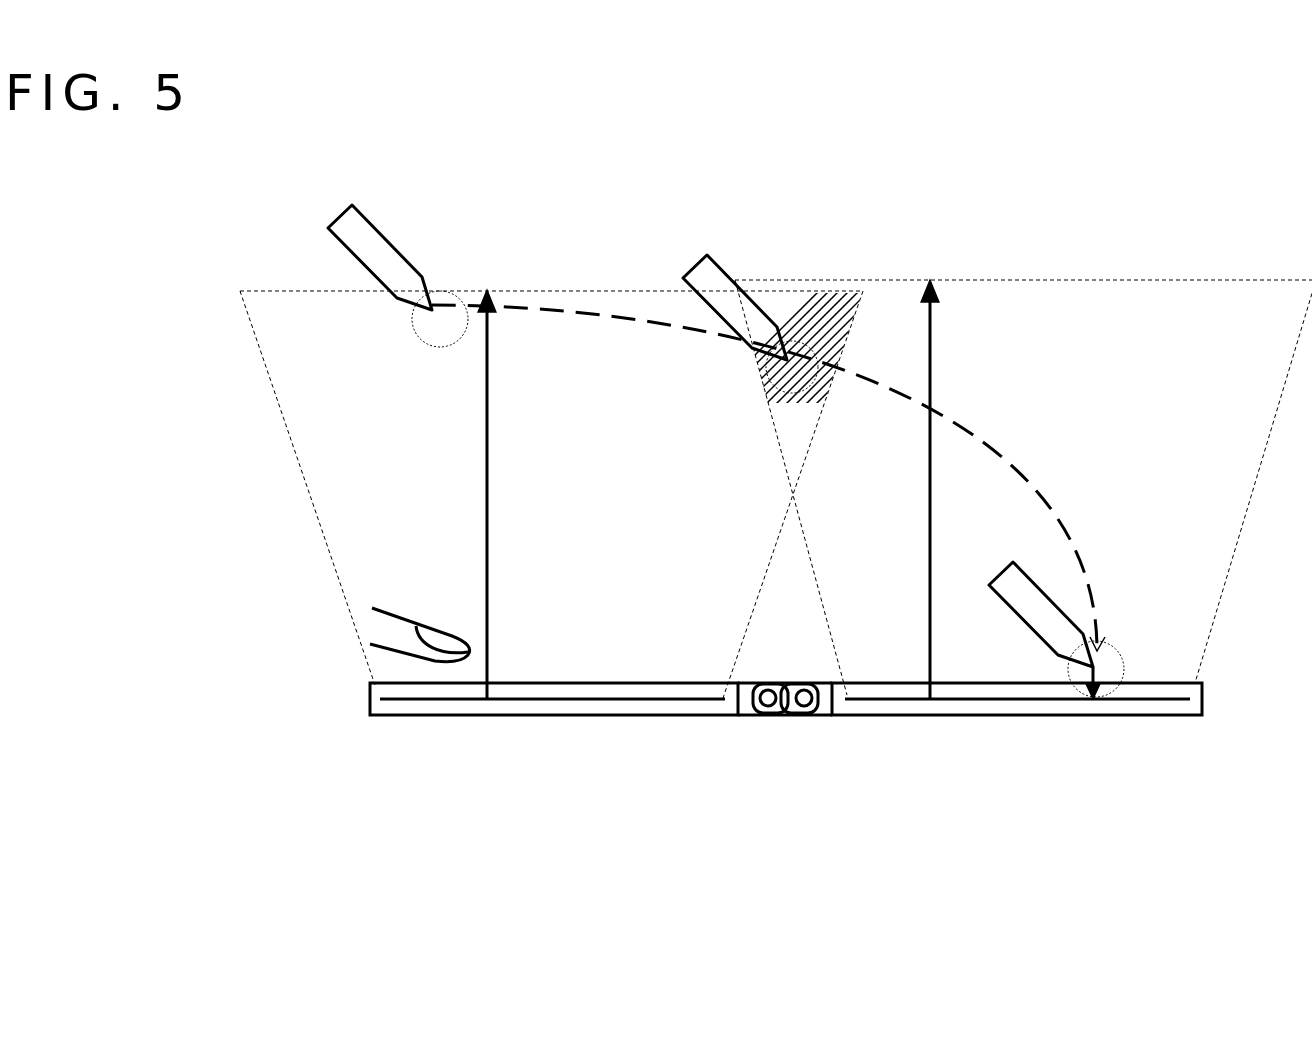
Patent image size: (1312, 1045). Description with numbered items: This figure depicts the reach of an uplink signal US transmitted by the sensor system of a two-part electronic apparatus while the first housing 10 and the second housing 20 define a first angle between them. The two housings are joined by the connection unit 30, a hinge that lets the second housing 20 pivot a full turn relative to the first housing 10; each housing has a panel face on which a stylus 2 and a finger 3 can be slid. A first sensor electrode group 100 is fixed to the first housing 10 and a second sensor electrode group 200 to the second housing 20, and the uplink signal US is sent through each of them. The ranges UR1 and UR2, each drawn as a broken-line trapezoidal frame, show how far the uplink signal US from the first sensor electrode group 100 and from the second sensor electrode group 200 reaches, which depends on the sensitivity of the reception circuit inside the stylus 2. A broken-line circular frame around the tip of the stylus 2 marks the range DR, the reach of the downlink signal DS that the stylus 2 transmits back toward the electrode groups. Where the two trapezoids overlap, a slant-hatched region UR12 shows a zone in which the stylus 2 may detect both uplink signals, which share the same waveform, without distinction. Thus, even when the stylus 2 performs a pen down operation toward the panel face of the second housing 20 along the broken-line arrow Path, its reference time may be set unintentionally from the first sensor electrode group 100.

The stylus 2 is at (1000, 597).
The finger 3 is at (432, 623).
The first housing 10 is at (547, 717).
The second housing 20 is at (1022, 717).
The connection unit 30 is at (797, 715).
The first sensor electrode group 100 is at (477, 700).
The second sensor electrode group 200 is at (947, 702).
The uplink signal US is at (708, 475).
The downlink signal DS is at (1092, 700).
The range of downlink signal DR is at (430, 347).
The range of uplink signal from first sensor electrode group UR1 is at (573, 288).
The range of uplink signal from second sensor electrode group UR2 is at (1232, 280).
The overlapping uplink range UR12 is at (772, 400).
The pen down path Path is at (976, 435).